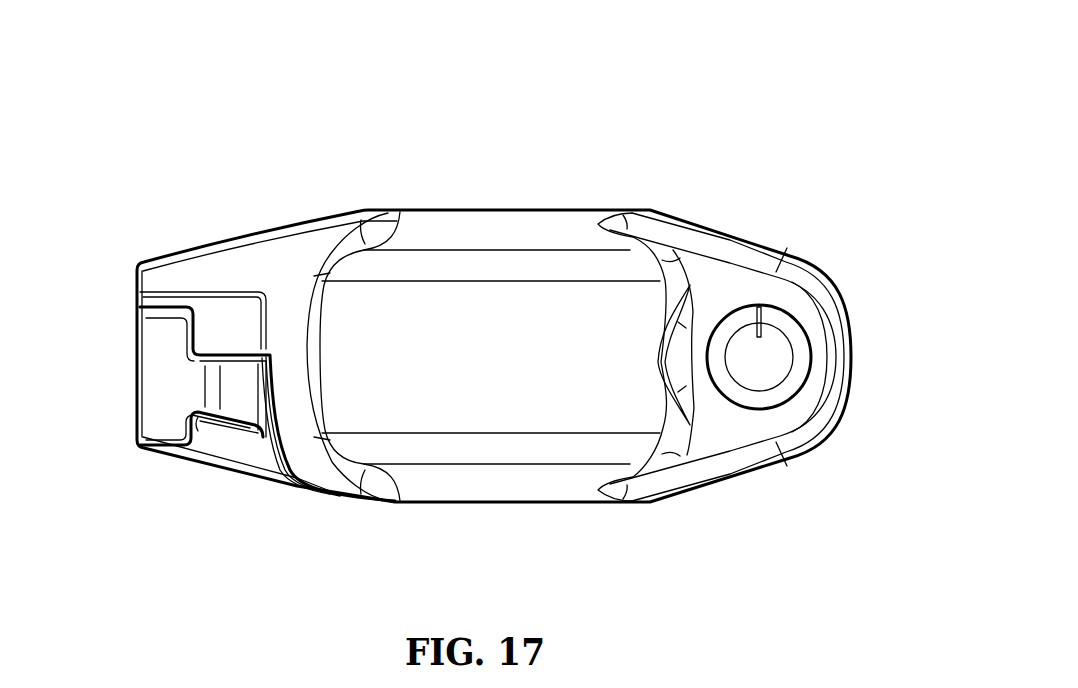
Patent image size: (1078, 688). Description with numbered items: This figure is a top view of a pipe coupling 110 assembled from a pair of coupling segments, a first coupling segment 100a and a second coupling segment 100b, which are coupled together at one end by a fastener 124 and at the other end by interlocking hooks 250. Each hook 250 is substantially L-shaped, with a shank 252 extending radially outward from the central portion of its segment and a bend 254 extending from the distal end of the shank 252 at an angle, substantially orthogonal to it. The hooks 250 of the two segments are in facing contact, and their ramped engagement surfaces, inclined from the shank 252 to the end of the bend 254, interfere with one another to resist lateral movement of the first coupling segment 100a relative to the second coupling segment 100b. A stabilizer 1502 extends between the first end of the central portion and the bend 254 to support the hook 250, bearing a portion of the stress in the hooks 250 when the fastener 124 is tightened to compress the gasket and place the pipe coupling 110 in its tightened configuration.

The pipe coupling 110 is at (672, 106).
The first coupling segment 100a is at (436, 303).
The second coupling segment 100b is at (158, 360).
The fastener 124 is at (770, 352).
The hook 250 is at (256, 196).
The shank 252 is at (191, 268).
The bend 254 is at (163, 395).
The stabilizer 1502 is at (233, 400).